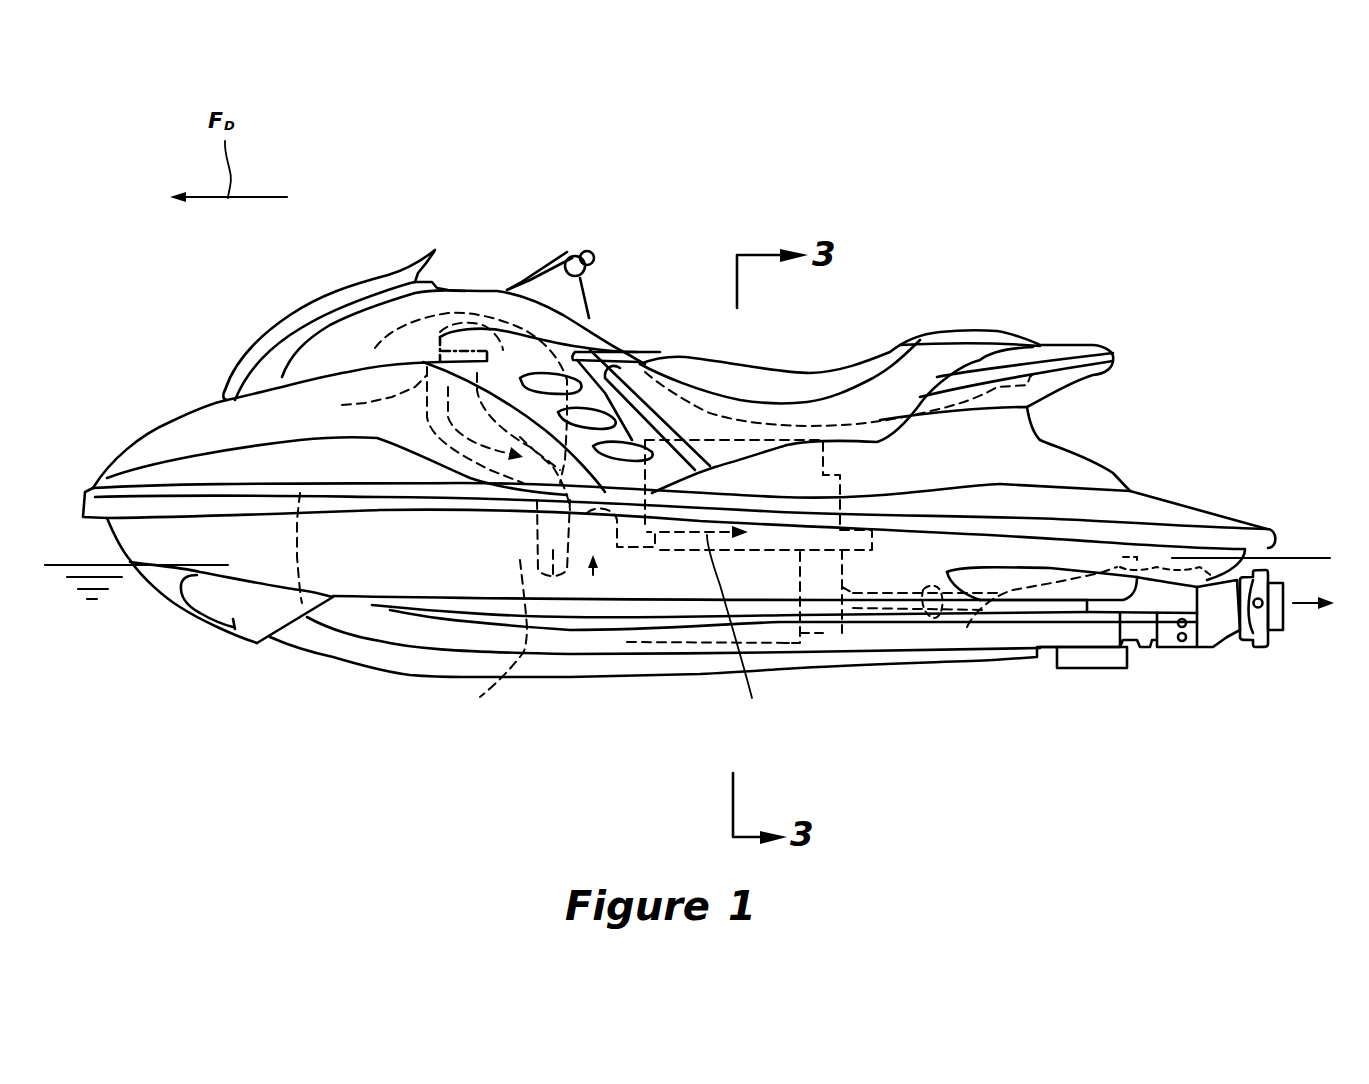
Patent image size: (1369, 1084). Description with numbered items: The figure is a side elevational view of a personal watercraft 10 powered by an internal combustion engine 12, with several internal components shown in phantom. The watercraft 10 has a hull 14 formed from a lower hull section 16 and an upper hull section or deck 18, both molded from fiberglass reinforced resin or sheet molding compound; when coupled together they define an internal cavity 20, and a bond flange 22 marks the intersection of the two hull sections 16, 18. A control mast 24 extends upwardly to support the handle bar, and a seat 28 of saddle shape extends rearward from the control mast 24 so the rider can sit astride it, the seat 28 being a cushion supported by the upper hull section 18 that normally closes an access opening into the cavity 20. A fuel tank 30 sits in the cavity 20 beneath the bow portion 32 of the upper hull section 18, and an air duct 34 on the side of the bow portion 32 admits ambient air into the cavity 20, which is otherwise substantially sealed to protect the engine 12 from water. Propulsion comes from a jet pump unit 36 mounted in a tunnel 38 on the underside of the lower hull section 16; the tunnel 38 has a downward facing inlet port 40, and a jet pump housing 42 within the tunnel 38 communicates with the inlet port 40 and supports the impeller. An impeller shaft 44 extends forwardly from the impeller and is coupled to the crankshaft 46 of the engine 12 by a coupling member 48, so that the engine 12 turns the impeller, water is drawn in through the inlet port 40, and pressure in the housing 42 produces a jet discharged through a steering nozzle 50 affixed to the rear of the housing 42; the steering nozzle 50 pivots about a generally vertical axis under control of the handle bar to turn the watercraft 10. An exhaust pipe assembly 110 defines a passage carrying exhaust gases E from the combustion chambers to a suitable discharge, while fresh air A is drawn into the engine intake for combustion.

The watercraft 10 is at (1118, 300).
The internal combustion engine 12 is at (695, 655).
The hull 14 is at (172, 422).
The lower hull section 16 is at (572, 679).
The upper hull section 18 is at (135, 447).
The internal cavity 20 is at (552, 591).
The bond flange 22 is at (1188, 527).
The control mast 24 is at (525, 285).
The seat 28 is at (813, 372).
The fuel tank 30 is at (295, 555).
The bow portion 32 is at (577, 352).
The air duct 34 is at (429, 398).
The jet pump unit 36 is at (1222, 638).
The tunnel 38 is at (1057, 610).
The inlet port 40 is at (942, 667).
The jet pump housing 42 is at (1162, 648).
The impeller shaft 44 is at (967, 627).
The crankshaft 46 is at (892, 586).
The coupling member 48 is at (932, 587).
The steering nozzle 50 is at (1285, 617).
The exhaust pipe assembly 110 is at (812, 657).
The fresh air A is at (348, 548).
The exhaust gases E is at (736, 630).